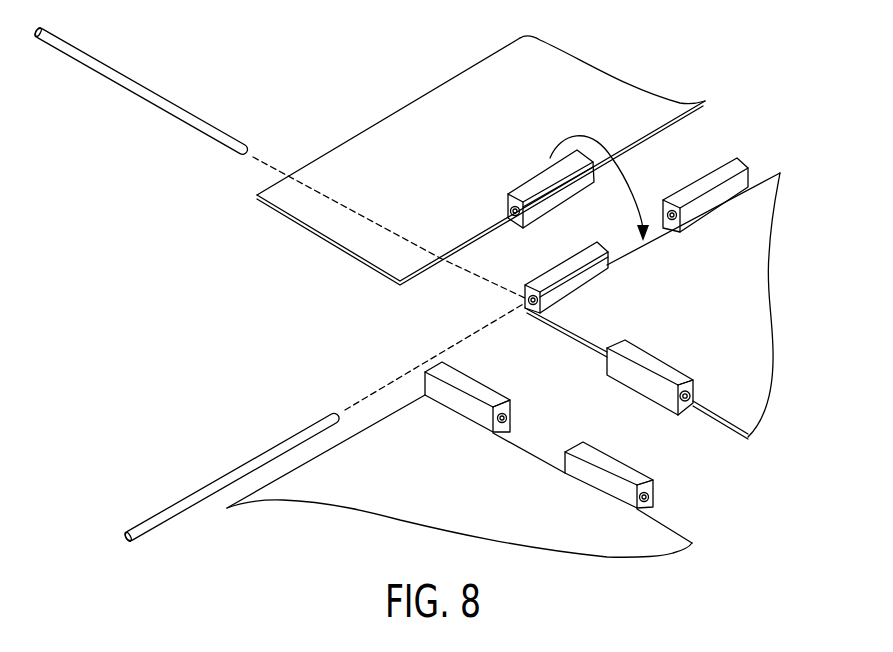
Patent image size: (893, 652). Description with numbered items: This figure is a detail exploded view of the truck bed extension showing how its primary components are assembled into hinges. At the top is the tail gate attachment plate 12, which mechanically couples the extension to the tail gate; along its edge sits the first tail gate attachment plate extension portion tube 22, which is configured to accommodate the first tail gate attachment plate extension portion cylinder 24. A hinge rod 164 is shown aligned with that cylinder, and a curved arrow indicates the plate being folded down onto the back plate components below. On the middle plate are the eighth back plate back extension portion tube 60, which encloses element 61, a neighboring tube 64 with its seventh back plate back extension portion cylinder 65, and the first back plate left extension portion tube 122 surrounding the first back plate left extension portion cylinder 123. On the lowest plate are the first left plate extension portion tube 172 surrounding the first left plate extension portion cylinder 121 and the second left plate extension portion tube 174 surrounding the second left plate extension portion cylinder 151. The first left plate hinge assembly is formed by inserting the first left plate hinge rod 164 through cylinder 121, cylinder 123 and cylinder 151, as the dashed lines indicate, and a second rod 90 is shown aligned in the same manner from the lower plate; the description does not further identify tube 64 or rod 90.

The tail gate attachment plate 12 is at (437, 113).
The first tail gate attachment plate extension portion tube 22 is at (540, 177).
The first tail gate attachment plate extension portion cylinder 24 is at (503, 176).
The eighth back plate back extension portion tube 60 is at (530, 283).
The eighth back plate back extension portion tube 61 is at (495, 310).
The alignment block 64 is at (698, 207).
The seventh back plate back extension portion cylinder 65 is at (662, 182).
The alignment pin 90 is at (279, 451).
The first back plate left extension portion tube 122 is at (671, 390).
The first back plate left extension portion cylinder 123 is at (723, 440).
The first left plate hinge rod 164 is at (158, 101).
The first left plate extension portion tube 172 is at (497, 396).
The first left plate extension portion cylinder 121 is at (542, 394).
The second left plate extension portion tube 174 is at (638, 475).
The second left plate extension portion cylinder 151 is at (685, 492).